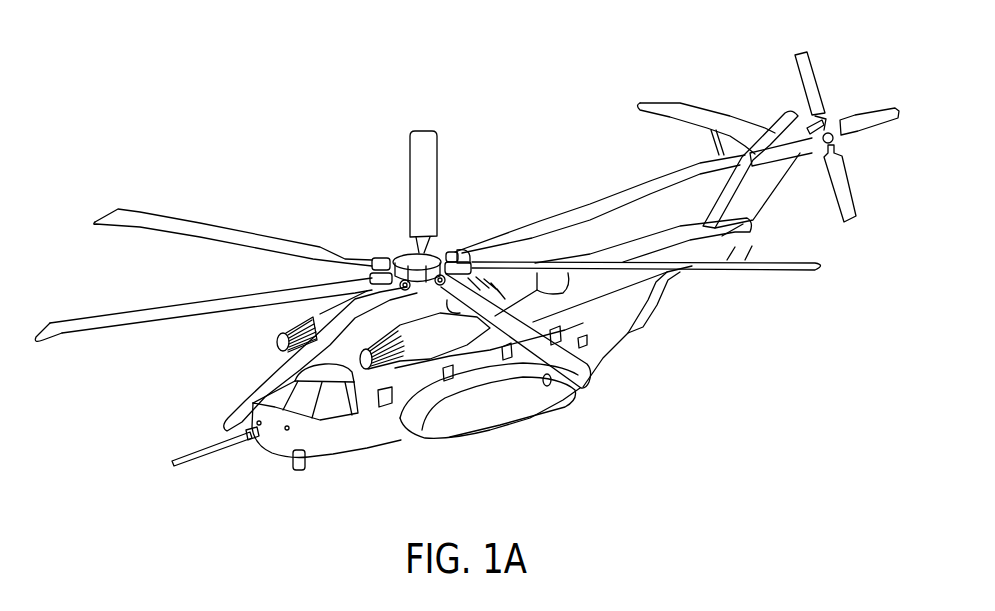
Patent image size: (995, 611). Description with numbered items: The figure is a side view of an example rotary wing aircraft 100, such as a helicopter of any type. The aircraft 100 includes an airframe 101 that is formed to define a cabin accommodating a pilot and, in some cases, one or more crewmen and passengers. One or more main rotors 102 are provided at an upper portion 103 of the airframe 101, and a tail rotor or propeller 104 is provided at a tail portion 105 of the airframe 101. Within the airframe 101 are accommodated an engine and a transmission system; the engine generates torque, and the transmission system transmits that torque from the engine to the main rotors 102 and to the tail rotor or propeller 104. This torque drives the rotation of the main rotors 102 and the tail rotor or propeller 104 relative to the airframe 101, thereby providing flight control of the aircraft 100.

The aircraft 100 is at (225, 170).
The airframe 101 is at (347, 447).
The main rotor 102 is at (408, 158).
The upper portion 103 is at (393, 263).
The tail rotor or propeller 104 is at (799, 73).
The tail portion 105 is at (750, 231).